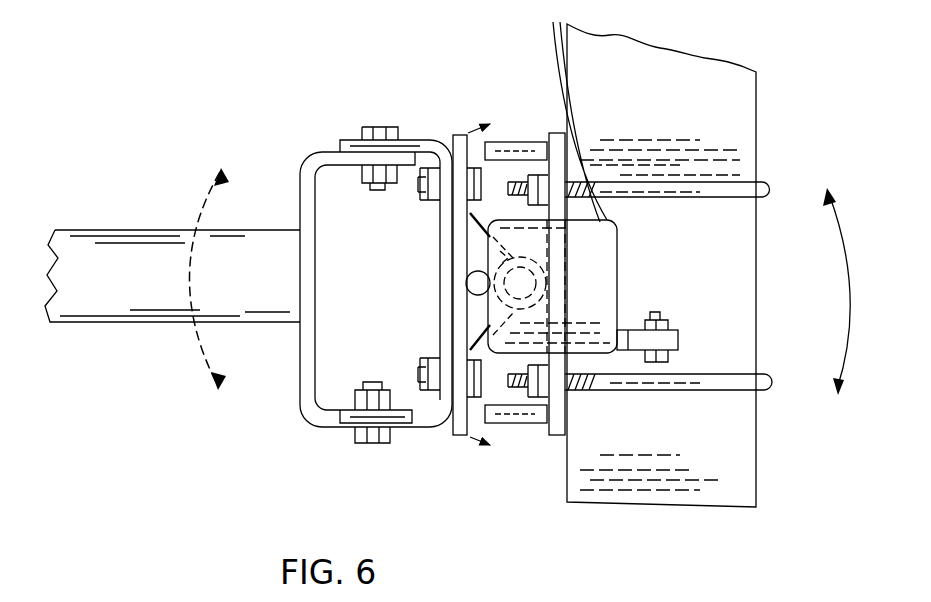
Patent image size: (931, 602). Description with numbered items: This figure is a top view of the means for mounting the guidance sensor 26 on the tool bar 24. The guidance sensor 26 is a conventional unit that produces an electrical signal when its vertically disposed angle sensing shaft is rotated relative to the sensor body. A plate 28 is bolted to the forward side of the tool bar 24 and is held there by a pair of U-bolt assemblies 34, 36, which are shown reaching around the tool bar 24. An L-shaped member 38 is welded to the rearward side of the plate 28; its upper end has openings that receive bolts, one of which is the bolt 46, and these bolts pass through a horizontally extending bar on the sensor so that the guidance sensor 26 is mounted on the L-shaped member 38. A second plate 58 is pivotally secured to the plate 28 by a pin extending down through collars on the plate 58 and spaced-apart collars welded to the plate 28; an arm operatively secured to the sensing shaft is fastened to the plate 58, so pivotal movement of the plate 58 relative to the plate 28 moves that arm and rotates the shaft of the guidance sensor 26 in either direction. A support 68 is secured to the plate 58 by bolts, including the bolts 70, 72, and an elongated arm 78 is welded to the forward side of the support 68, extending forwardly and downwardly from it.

The tool bar 24 is at (715, 465).
The guidance sensor 26 is at (625, 288).
The plate 28 is at (553, 435).
The U-bolt assembly 34 is at (710, 185).
The U-bolt assembly 36 is at (820, 291).
The L-shaped member 38 is at (622, 350).
The bolt 46 is at (655, 362).
The plate 58 is at (460, 135).
The support 68 is at (441, 425).
The bolt 70 is at (510, 160).
The bolt 72 is at (500, 405).
The elongated arm 78 is at (175, 325).